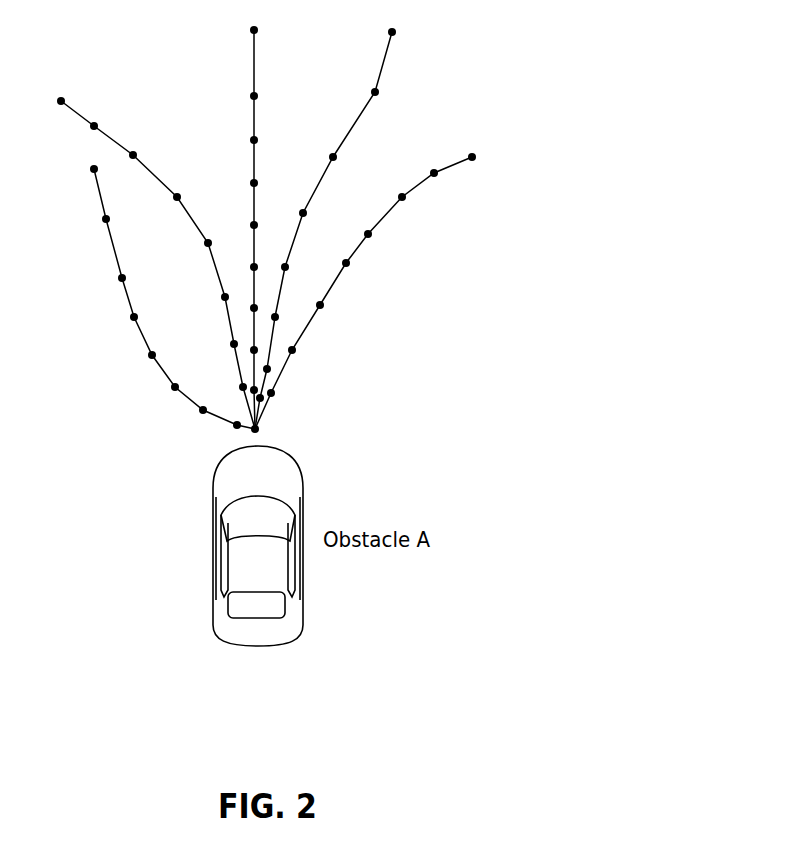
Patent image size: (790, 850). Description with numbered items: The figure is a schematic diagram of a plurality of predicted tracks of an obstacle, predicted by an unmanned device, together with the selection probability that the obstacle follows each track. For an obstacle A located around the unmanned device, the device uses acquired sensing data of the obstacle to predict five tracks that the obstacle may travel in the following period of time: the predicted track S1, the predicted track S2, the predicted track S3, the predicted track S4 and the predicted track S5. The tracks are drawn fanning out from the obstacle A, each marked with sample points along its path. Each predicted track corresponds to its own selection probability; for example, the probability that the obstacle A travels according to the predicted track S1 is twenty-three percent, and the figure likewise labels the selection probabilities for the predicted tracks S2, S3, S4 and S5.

The predicted track S1 is at (146, 288).
The predicted track S2 is at (136, 246).
The predicted track S3 is at (256, 216).
The predicted track S4 is at (343, 216).
The predicted track S5 is at (388, 280).